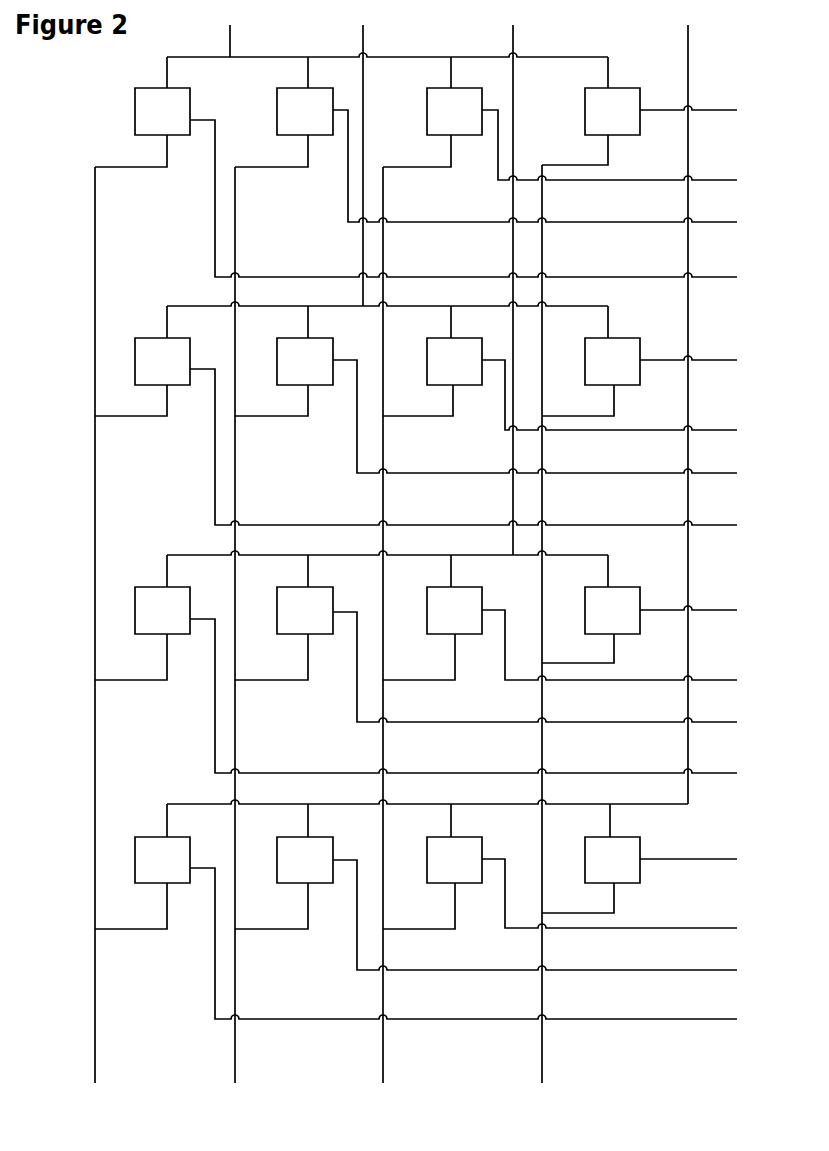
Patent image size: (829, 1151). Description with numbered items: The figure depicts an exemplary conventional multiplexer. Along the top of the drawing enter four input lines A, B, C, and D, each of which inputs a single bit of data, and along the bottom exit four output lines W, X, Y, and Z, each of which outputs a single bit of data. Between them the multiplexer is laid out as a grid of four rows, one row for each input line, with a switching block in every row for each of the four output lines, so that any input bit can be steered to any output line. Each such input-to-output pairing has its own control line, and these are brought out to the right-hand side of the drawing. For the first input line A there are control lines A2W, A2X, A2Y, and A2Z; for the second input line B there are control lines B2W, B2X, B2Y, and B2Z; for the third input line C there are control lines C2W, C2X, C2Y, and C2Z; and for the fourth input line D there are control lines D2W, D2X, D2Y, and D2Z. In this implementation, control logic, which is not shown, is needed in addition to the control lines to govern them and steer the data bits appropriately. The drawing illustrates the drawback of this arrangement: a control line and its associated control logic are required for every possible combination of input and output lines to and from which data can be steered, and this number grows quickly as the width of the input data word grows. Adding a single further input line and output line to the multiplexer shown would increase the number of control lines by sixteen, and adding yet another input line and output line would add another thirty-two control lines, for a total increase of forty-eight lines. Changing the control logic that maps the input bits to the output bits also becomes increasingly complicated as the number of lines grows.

The input line A is at (230, 31).
The input line B is at (362, 156).
The input line C is at (512, 280).
The input line D is at (688, 405).
The output line W is at (95, 641).
The output line X is at (237, 642).
The output line Y is at (385, 641).
The output line Z is at (545, 641).
The control line A2Z is at (711, 110).
The control line A2Y is at (633, 149).
The control line A2X is at (558, 171).
The control line A2W is at (489, 202).
The control line B2Z is at (711, 360).
The control line B2Y is at (633, 399).
The control line B2X is at (558, 421).
The control line B2W is at (489, 451).
The control line C2Z is at (711, 610).
The control line C2Y is at (632, 649).
The control line C2X is at (558, 671).
The control line C2W is at (489, 700).
The control line D2Z is at (712, 859).
The control line D2Y is at (633, 898).
The control line D2X is at (559, 919).
The control line D2W is at (490, 948).